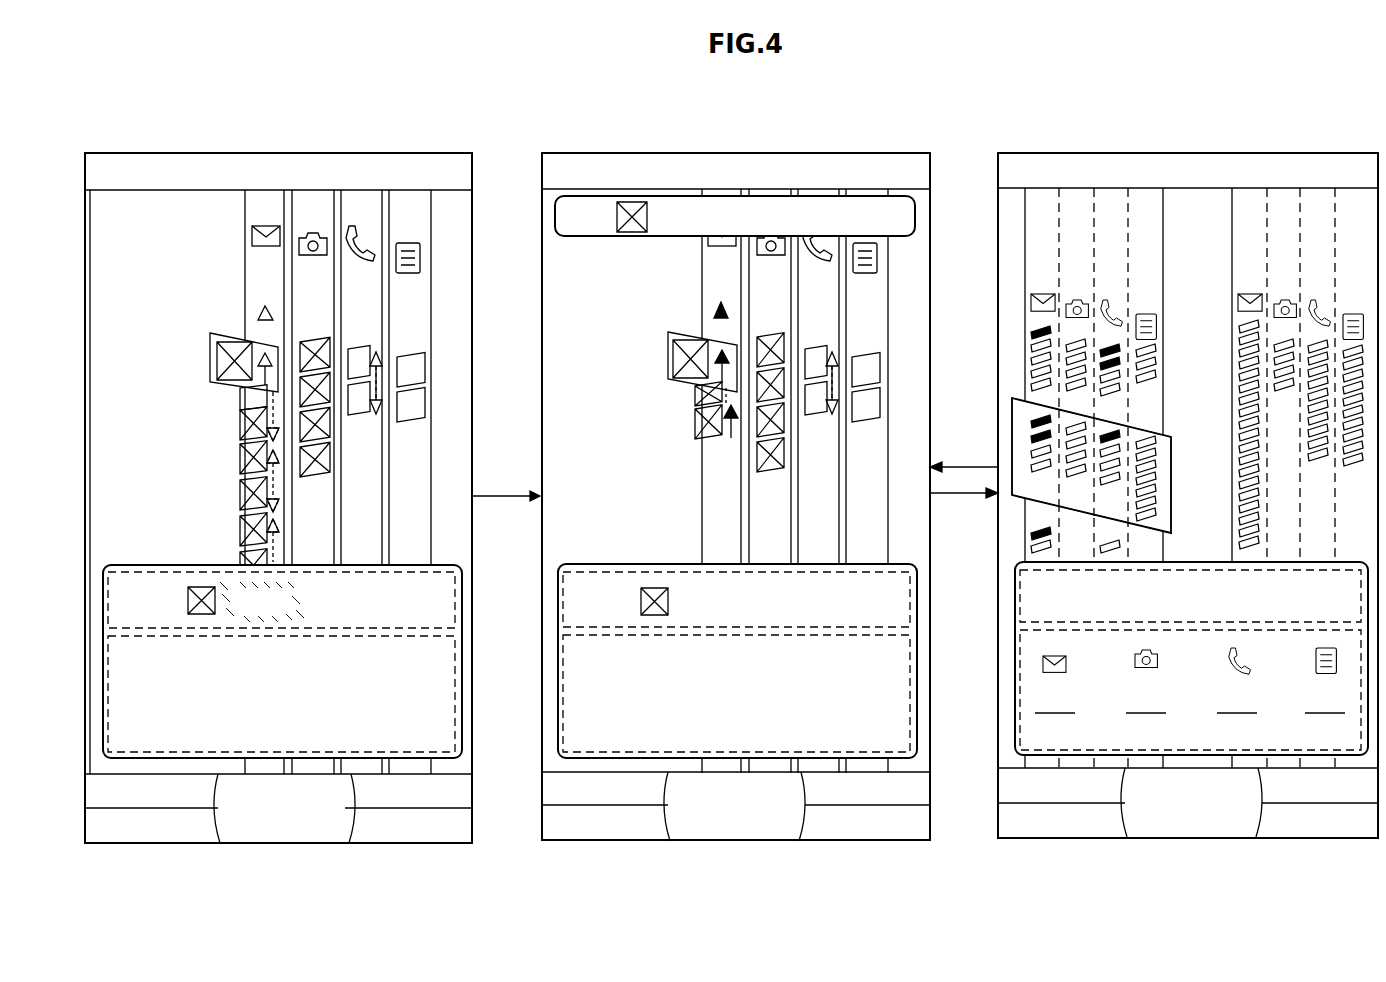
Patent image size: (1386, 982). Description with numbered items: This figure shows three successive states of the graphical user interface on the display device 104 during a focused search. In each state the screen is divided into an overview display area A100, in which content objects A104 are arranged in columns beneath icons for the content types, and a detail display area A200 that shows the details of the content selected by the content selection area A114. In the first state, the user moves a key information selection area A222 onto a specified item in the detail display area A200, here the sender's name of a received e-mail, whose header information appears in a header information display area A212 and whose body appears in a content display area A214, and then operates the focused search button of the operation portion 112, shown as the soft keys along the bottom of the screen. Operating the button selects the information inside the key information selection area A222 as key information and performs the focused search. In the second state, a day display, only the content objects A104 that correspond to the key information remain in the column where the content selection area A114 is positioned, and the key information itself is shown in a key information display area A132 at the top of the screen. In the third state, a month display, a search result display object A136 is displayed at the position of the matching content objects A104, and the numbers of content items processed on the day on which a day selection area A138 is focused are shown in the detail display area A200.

The display device 104 is at (113, 153).
The operation portion 112 is at (486, 808).
The overview display area A100 is at (586, 468).
The content objects A104 is at (1030, 333).
The content selection area A114 is at (668, 356).
The key information display area A132 is at (555, 222).
The search result display object A136 is at (1012, 398).
The day selection area A138 is at (1172, 437).
The detail display area A200 is at (462, 680).
The header information display area A212 is at (912, 586).
The content display area A214 is at (912, 676).
The key information selection area A222 is at (228, 585).